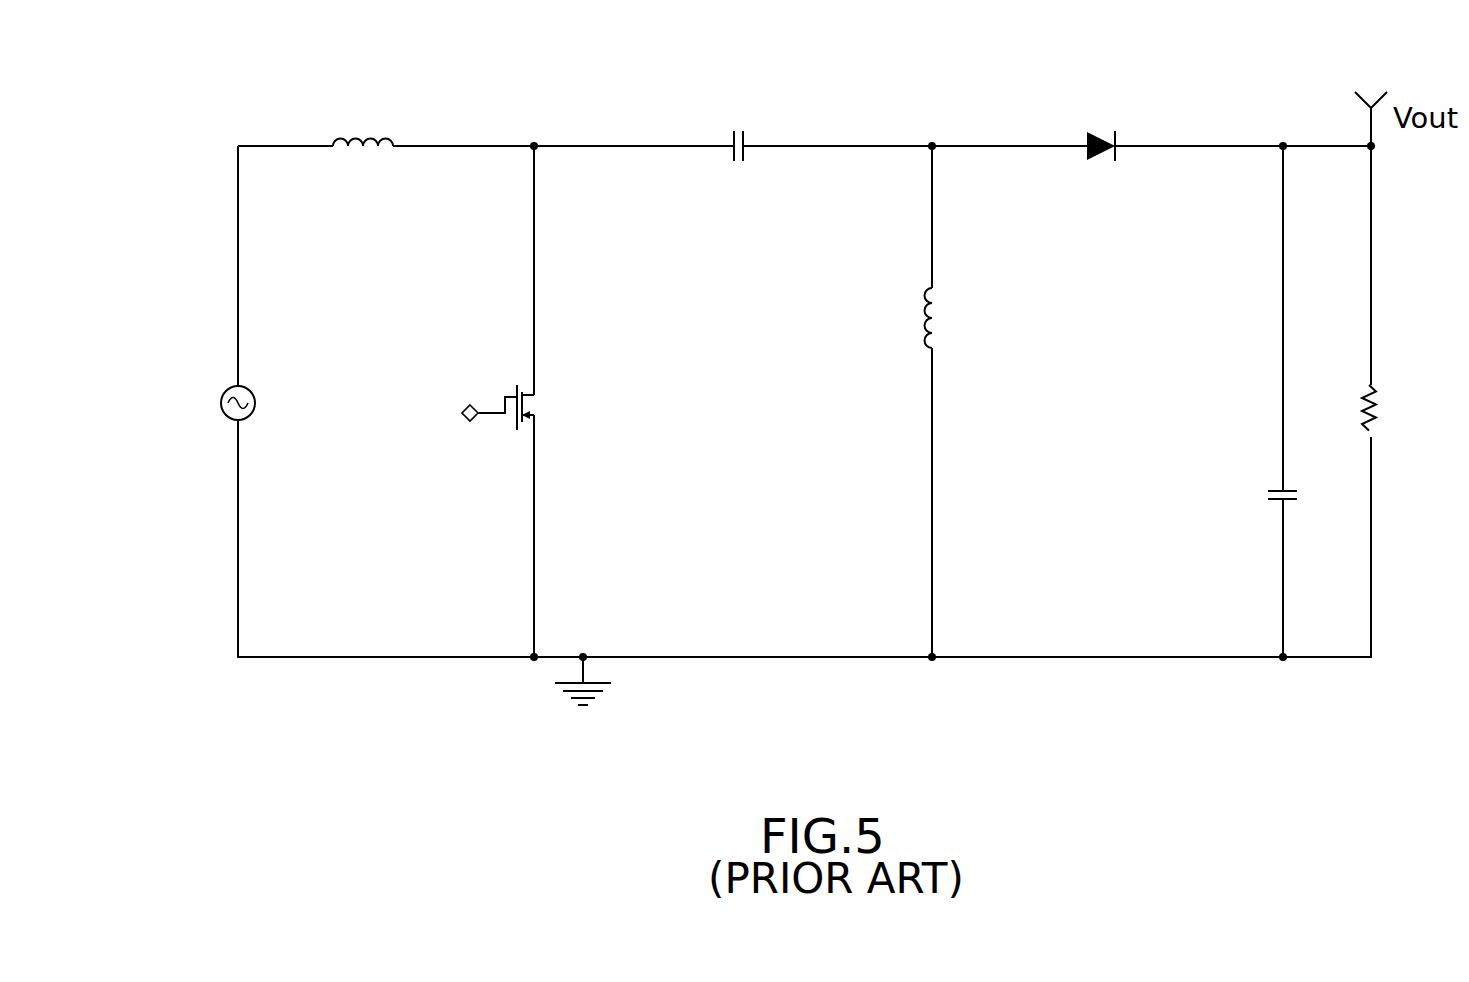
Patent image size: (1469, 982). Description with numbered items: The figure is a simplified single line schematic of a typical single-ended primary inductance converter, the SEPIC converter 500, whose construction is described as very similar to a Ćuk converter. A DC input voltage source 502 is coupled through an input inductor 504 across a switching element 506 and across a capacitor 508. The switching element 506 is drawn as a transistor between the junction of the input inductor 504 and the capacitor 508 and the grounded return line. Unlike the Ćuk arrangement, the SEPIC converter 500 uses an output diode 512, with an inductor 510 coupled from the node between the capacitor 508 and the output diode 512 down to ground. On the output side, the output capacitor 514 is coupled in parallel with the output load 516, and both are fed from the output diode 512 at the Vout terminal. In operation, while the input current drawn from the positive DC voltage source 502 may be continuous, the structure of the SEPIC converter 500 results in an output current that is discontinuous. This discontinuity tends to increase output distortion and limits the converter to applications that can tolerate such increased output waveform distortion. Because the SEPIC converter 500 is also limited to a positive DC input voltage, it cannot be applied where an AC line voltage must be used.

The SEPIC converter 500 is at (396, 718).
The DC input voltage source 502 is at (210, 404).
The input inductor 504 is at (351, 136).
The switching element 506 is at (530, 409).
The capacitor 508 is at (738, 131).
The inductor 510 is at (924, 325).
The output diode 512 is at (1098, 132).
The output capacitor 514 is at (1262, 495).
The output load 516 is at (1376, 418).